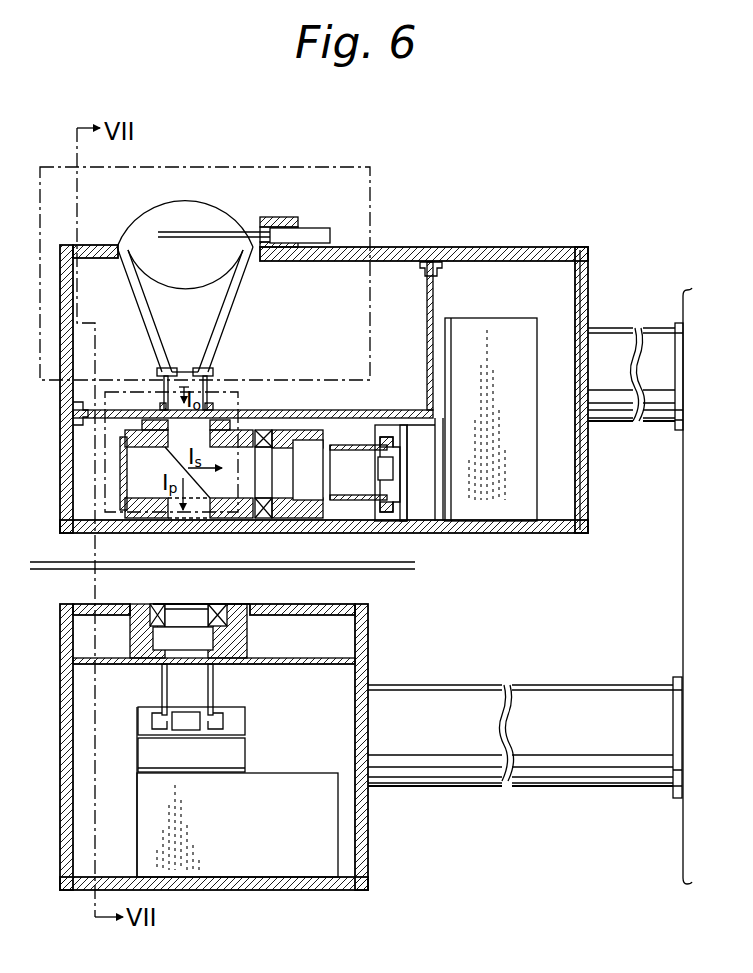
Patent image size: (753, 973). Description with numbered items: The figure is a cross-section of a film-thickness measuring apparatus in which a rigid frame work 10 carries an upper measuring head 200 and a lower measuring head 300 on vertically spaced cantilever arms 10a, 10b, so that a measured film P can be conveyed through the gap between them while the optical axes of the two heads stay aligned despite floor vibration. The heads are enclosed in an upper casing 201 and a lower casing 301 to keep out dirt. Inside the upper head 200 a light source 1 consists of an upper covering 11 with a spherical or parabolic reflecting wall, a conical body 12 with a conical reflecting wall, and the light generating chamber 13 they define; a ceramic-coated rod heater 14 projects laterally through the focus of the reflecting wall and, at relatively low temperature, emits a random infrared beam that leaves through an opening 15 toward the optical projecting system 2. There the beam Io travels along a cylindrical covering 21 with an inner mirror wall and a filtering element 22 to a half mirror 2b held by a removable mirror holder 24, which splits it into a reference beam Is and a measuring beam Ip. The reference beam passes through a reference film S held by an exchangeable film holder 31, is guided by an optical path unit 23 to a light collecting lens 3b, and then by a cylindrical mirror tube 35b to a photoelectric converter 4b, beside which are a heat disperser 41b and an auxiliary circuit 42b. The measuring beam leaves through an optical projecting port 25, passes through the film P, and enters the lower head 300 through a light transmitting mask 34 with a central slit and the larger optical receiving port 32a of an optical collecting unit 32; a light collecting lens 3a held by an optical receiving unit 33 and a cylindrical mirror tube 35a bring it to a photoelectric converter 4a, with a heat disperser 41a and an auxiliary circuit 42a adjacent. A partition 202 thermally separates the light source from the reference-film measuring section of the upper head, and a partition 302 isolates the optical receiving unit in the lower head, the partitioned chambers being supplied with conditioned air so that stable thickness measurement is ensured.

The light source 1 is at (372, 167).
The optical projecting system 2 is at (108, 505).
The half mirror 2b is at (167, 450).
The light collecting lens 3a is at (210, 636).
The light collecting lens 3b is at (308, 497).
The photoelectric converter 4a is at (200, 722).
The photoelectric converter 4b is at (395, 478).
The rigid frame work 10 is at (685, 494).
The upper cantilever arm 10a is at (606, 420).
The lower cantilever arm 10b is at (588, 698).
The upper covering 11 is at (195, 200).
The conical body 12 is at (237, 292).
The light generating chamber 13 is at (150, 292).
The heater 14 is at (205, 232).
The opening 15 is at (190, 368).
The cylindrical covering 21 is at (208, 384).
The filtering element 22 is at (242, 404).
The optical path unit 23 is at (290, 428).
The mirror holder 24 is at (121, 452).
The optical projecting port 25 is at (185, 520).
The film holder 31 is at (265, 500).
The optical collecting unit 32 is at (157, 603).
The optical receiving port 32a is at (213, 604).
The optical receiving unit 33 is at (140, 645).
The light transmitting mask 34 is at (217, 604).
The cylindrical mirror tube 35a is at (214, 690).
The cylindrical mirror tube 35b is at (366, 497).
The heat disperser 41a is at (232, 755).
The heat disperser 41b is at (433, 485).
The auxiliary circuit 42a is at (322, 826).
The auxiliary circuit 42b is at (518, 500).
The upper measuring head 200 is at (511, 248).
The upper casing 201 is at (590, 283).
The partition 202 is at (434, 292).
The lower measuring head 300 is at (370, 737).
The lower casing 301 is at (365, 657).
The partition 302 is at (324, 664).
The reference film S is at (270, 520).
The measured film P is at (400, 572).